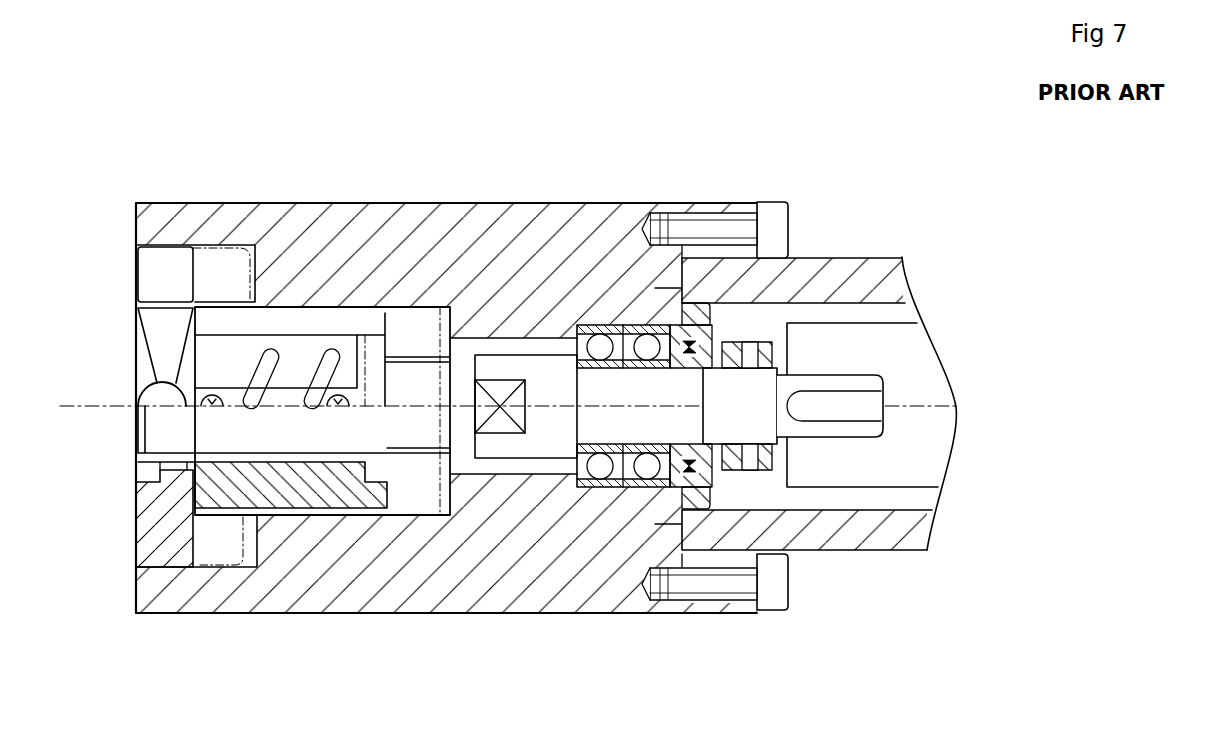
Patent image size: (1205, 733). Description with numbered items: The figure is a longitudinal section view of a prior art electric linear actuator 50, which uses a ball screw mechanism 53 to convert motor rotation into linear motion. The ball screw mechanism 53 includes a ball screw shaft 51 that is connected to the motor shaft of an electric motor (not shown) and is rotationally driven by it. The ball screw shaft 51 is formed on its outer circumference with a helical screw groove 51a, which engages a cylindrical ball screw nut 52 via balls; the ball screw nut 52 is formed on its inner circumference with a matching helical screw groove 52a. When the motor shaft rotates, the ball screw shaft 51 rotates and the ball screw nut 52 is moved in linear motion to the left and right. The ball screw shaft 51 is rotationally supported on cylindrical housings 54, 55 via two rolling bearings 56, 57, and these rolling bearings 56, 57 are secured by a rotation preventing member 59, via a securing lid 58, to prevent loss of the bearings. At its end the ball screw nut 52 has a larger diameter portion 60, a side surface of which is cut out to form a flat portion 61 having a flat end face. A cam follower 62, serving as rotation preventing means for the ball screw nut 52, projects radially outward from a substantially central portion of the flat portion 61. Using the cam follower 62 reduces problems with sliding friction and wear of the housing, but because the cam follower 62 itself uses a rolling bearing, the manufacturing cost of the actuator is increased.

The electric linear actuator 50 is at (430, 148).
The ball screw shaft 51 is at (873, 358).
The helical screw groove 51a is at (405, 458).
The ball screw nut 52 is at (122, 270).
The helical screw groove 52a is at (200, 453).
The ball screw mechanism 53 is at (173, 420).
The cylindrical housing 54 is at (636, 204).
The cylindrical housing 55 is at (848, 278).
The rolling bearing 56 is at (593, 487).
The rolling bearing 57 is at (657, 487).
The securing lid 58 is at (752, 596).
The rotation preventing member 59 is at (767, 340).
The larger diameter portion 60 is at (172, 267).
The flat portion 61 is at (160, 352).
The cam follower 62 is at (134, 403).